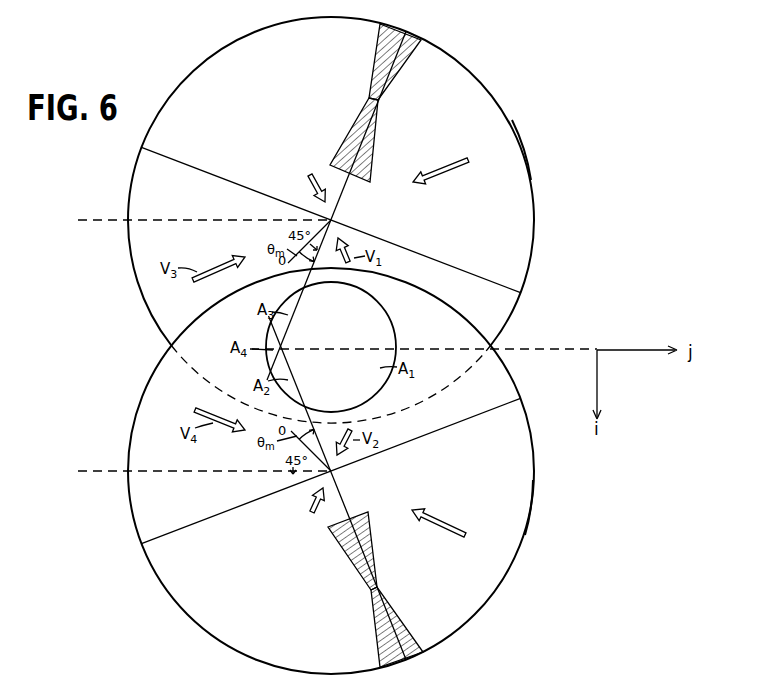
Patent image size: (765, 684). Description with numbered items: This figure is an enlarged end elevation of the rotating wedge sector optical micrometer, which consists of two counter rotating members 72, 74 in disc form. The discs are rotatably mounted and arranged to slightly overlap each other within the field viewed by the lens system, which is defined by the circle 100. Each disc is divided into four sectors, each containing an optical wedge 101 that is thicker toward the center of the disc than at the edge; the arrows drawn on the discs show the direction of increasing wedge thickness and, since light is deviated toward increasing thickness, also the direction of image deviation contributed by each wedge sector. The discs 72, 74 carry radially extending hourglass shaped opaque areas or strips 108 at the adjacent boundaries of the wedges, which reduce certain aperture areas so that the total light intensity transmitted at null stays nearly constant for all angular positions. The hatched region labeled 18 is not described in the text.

The magnet / hatched pole segment of upper disc 18 is at (418, 44).
The optical wedge 101 is at (524, 153).
The counter rotating member 74 is at (531, 243).
The counter rotating member 72 is at (526, 472).
The circle 100 is at (389, 328).
The hourglass shaped opaque areas or strips 108 is at (387, 618).